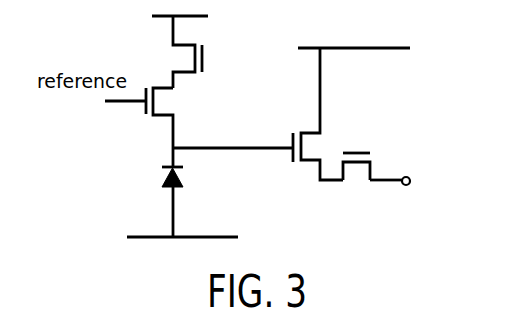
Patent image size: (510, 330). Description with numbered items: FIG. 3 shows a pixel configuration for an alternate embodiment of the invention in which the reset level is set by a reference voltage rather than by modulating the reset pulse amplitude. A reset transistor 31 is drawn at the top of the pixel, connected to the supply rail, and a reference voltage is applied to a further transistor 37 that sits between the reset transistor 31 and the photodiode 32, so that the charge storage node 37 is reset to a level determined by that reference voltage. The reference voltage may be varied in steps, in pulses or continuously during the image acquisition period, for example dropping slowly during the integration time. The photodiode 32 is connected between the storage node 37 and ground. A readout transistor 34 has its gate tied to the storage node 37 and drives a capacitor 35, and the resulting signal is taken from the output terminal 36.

The load transistor 31 is at (212, 52).
The diode 32 is at (149, 202).
The transistor 34 is at (258, 114).
The capacitor 35 is at (362, 152).
The output terminal 36 is at (406, 199).
The charge storage node 37 is at (161, 127).